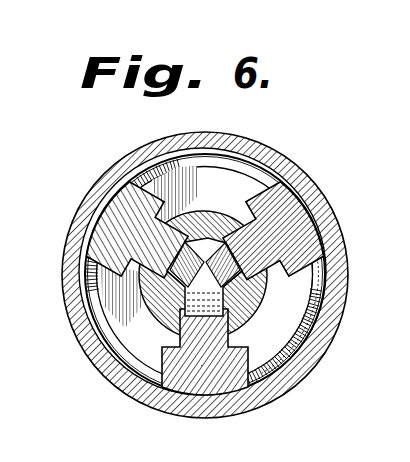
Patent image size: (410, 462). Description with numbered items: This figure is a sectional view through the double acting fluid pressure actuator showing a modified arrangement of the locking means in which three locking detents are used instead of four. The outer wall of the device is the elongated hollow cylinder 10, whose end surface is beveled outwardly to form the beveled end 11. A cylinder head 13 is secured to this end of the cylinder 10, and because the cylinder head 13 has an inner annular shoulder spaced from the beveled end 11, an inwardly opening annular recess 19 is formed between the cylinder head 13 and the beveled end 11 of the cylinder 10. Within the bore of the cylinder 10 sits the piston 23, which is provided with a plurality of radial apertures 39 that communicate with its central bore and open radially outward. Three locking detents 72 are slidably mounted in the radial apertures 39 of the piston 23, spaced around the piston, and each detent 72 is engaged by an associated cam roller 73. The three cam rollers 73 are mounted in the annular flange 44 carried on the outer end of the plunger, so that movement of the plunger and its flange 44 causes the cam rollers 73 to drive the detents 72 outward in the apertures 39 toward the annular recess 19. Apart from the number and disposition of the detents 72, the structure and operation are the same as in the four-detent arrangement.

The cylinder 10 is at (311, 330).
The beveled end surface 11 is at (315, 307).
The cylinder head 13 is at (348, 264).
The annular recess 19 is at (325, 290).
The piston 23 is at (291, 344).
The radial apertures 39 is at (289, 280).
The annular flange 44 is at (207, 284).
The locking detents 72 is at (111, 216).
The cam rollers 73 is at (187, 243).